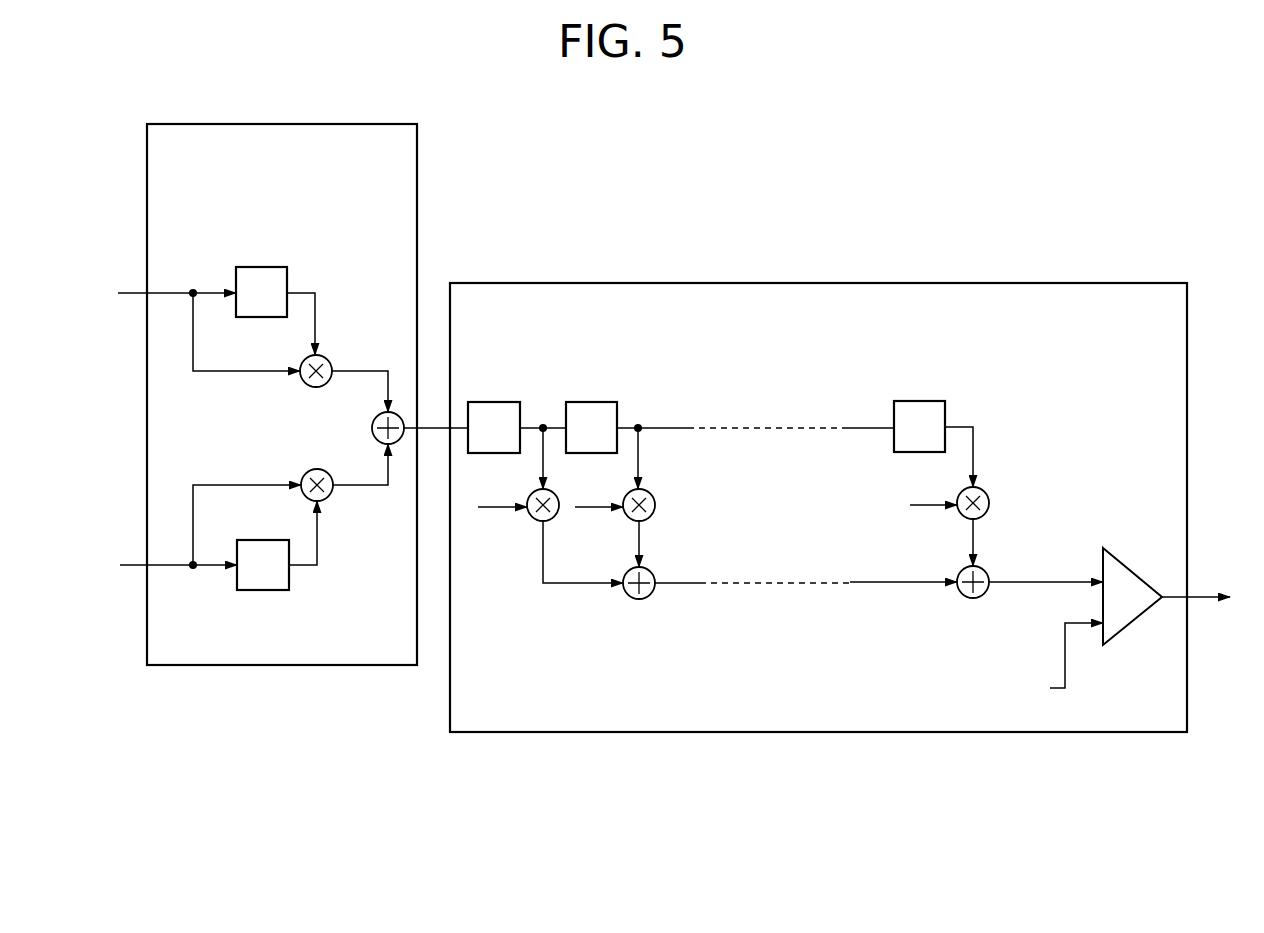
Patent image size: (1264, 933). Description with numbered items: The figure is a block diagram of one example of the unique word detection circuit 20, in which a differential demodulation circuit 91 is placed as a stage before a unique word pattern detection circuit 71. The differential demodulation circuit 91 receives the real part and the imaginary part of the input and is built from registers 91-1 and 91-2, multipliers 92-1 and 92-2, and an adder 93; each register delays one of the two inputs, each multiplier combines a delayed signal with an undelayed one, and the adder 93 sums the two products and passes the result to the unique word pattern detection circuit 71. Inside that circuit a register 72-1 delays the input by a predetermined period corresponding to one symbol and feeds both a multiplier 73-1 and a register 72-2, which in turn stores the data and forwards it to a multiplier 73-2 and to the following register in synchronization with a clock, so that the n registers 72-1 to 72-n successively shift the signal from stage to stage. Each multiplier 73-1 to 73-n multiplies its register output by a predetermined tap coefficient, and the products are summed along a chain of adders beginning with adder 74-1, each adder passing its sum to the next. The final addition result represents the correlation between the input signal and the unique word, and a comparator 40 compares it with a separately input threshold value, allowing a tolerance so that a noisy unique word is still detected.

The unique word detection circuit 20 is at (698, 752).
The differential demodulation circuit 91 is at (356, 123).
The register 91-1 is at (258, 267).
The register 91-2 is at (263, 590).
The multiplier 92-1 is at (362, 344).
The multiplier 92-2 is at (330, 497).
The adder 93 is at (372, 428).
The unique word pattern detection circuit 71 is at (1014, 281).
The register 72-1 is at (490, 402).
The register 72-2 is at (590, 402).
The register 72-n is at (917, 401).
The multiplier 73-1 is at (534, 519).
The multiplier 73-2 is at (656, 504).
The multiplier 73-n is at (1020, 478).
The adder 74-1 is at (630, 598).
The comparator 40 is at (1128, 567).